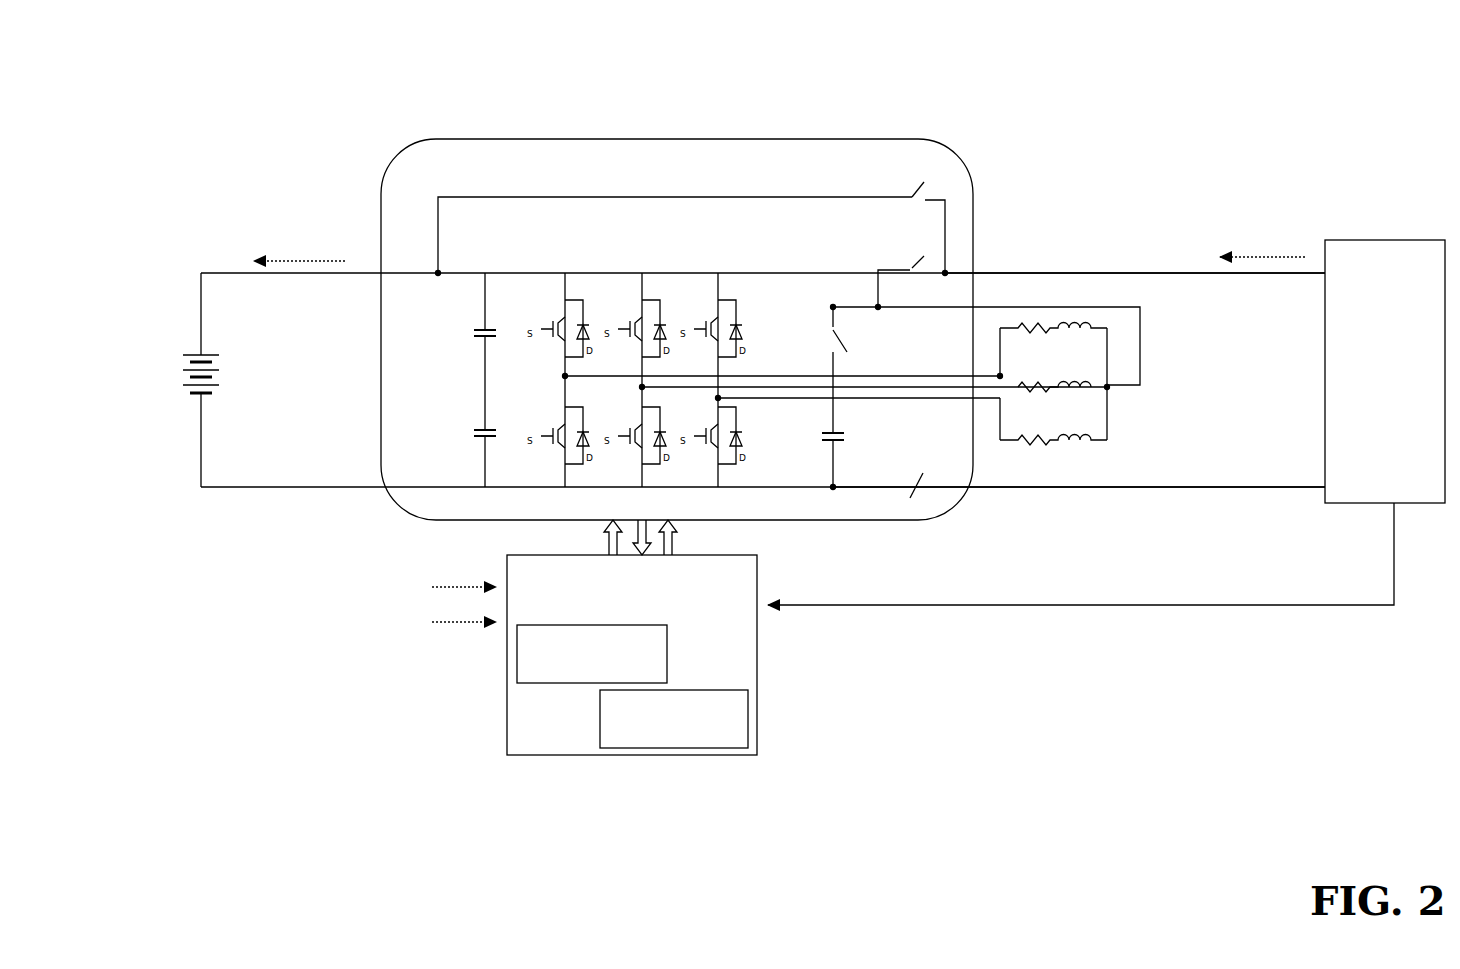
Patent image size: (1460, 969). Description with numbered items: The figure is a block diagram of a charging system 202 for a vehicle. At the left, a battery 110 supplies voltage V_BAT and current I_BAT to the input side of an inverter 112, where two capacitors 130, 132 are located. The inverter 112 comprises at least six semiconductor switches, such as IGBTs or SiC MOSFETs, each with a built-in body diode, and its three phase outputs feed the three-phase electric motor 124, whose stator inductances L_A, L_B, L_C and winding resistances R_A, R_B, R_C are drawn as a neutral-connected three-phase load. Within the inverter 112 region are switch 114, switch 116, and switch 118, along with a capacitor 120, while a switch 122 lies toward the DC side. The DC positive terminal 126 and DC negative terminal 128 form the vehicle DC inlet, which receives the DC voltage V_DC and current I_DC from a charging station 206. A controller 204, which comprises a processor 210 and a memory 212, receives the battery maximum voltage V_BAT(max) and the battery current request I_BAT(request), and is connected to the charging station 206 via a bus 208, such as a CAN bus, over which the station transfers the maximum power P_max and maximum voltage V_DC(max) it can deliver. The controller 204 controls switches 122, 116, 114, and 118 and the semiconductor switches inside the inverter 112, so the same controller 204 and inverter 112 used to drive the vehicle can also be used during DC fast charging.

The battery 110 is at (184, 412).
The inverter 112 is at (620, 138).
The switch 114 is at (905, 205).
The switch 116 is at (900, 263).
The switch 118 is at (815, 318).
The capacitor 120 is at (820, 458).
The switch 122 is at (935, 506).
The three-phase electric motor 124 is at (1128, 426).
The DC positive terminal 126 is at (1303, 236).
The DC negative terminal 128 is at (1298, 496).
The capacitor 130 is at (462, 336).
The capacitor 132 is at (462, 436).
The charging system 202 is at (858, 68).
The controller 204 is at (530, 637).
The charging station 206 is at (1385, 371).
The bus 208 is at (1048, 624).
The processor 210 is at (592, 654).
The memory 212 is at (674, 719).